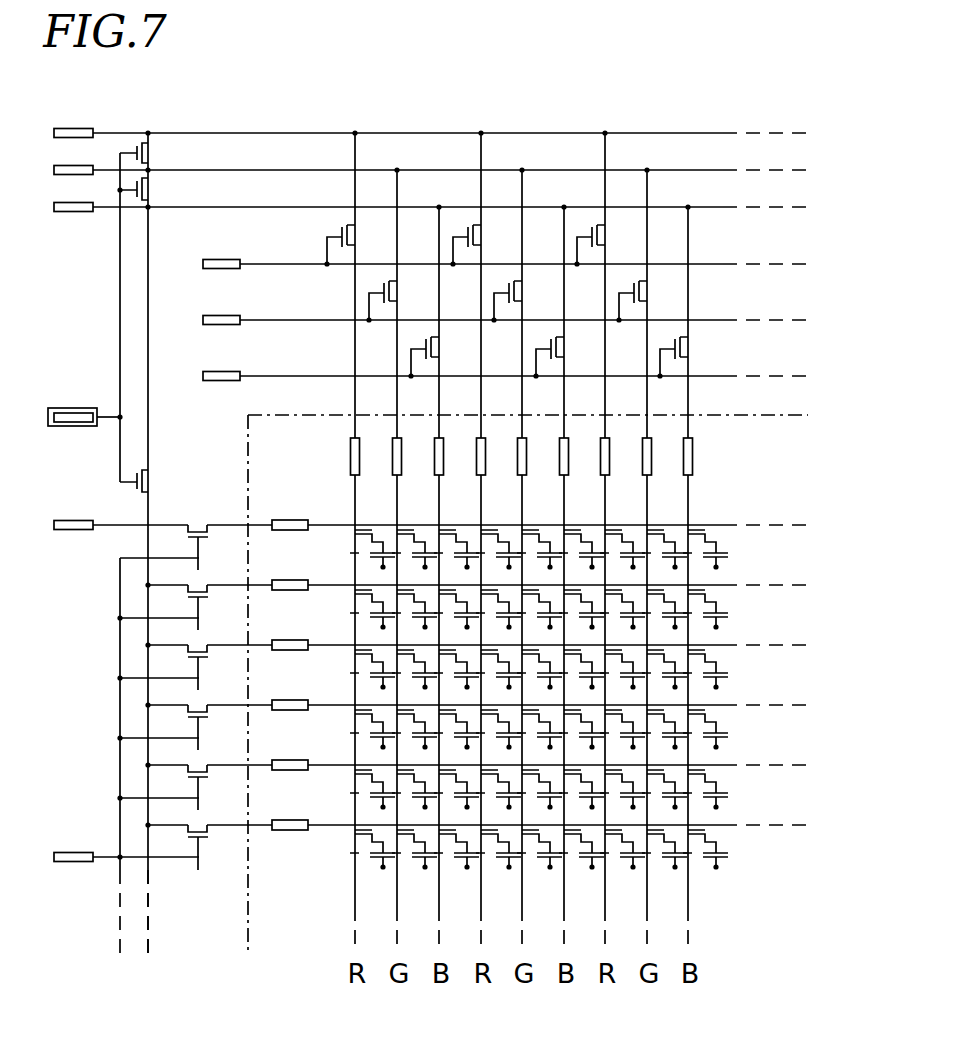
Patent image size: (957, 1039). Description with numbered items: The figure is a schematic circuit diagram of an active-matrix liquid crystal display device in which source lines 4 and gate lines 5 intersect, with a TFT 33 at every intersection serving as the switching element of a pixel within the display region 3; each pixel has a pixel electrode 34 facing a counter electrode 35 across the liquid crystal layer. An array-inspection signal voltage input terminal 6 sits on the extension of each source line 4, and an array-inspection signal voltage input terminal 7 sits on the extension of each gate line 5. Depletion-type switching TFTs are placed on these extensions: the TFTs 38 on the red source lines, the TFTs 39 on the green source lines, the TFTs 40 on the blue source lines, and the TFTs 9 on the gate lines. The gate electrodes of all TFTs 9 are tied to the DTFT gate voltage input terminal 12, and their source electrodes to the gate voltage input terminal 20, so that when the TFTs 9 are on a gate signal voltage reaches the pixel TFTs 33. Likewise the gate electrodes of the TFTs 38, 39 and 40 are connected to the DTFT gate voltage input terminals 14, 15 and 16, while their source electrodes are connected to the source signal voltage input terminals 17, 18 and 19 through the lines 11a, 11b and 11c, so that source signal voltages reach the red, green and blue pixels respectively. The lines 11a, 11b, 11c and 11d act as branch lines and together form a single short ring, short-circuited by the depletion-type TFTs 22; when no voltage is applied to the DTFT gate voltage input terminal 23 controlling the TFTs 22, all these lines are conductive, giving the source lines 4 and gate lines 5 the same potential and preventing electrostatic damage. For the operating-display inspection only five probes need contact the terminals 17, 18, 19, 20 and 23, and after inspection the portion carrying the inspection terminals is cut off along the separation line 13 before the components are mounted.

The display region 3 is at (734, 850).
The source line 4 is at (690, 490).
The gate line 5 is at (330, 832).
The array-inspection signal voltage input terminal 6 is at (693, 448).
The array-inspection signal voltage input terminal 7 is at (283, 832).
The TFT 9 is at (210, 541).
The line 11a is at (668, 131).
The line 11b is at (705, 168).
The line 11c is at (735, 210).
The line 11d is at (148, 880).
The DTFT gate voltage input terminal 12 is at (63, 853).
The separation line 13 is at (262, 412).
The DTFT gate voltage input terminal 14 is at (213, 257).
The DTFT gate voltage input terminal 15 is at (221, 314).
The DTFT gate voltage input terminal 16 is at (221, 370).
The source signal voltage input terminal 17 is at (69, 133).
The source signal voltage input terminal 18 is at (53, 173).
The source signal voltage input terminal 19 is at (72, 217).
The gate voltage input terminal 20 is at (72, 532).
The depletion-type TFT 22 is at (152, 157).
The DTFT gate voltage input terminal 23 is at (66, 412).
The TFT 33 is at (706, 533).
The pixel electrode 34 is at (729, 554).
The counter electrode 35 is at (721, 567).
The TFT 38 is at (352, 240).
The TFT 39 is at (393, 296).
The TFT 40 is at (435, 353).